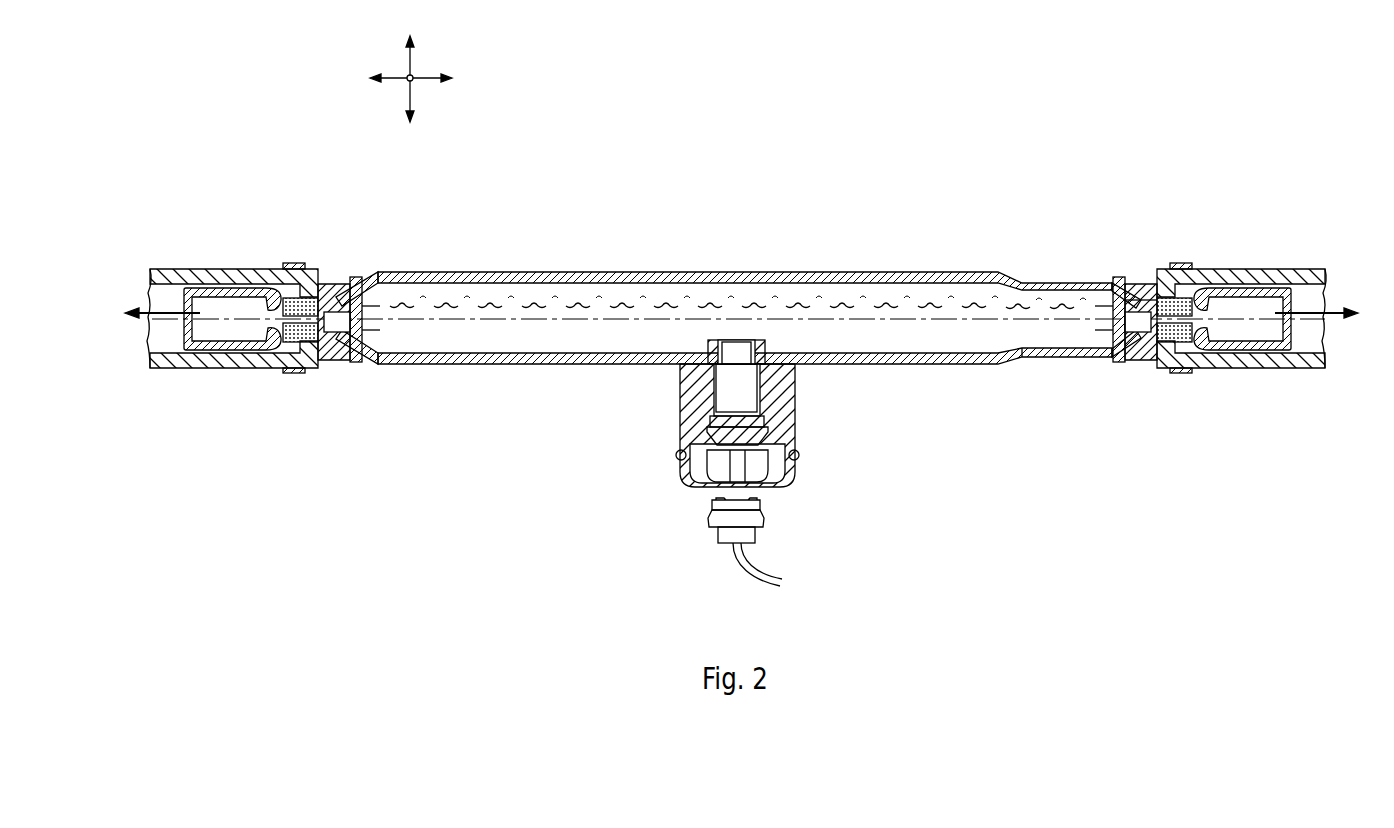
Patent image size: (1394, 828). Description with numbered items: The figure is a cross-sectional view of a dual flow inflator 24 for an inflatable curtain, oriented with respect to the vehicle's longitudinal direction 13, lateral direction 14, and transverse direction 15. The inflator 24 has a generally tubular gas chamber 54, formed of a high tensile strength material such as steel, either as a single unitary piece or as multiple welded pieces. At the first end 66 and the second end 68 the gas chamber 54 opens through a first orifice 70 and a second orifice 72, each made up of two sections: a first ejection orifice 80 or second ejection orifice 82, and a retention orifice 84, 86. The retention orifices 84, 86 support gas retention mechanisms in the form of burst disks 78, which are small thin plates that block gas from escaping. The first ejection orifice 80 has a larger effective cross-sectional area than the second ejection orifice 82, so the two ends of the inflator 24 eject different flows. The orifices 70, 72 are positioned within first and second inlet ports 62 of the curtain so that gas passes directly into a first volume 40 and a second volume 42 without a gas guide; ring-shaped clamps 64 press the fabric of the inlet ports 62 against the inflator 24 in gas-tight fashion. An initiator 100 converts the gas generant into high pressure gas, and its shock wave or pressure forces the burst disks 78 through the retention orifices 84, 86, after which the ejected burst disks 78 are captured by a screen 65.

The longitudinal direction 13 is at (431, 80).
The lateral direction 14 is at (407, 83).
The transverse direction 15 is at (412, 62).
The inflator 24 is at (812, 184).
The first volume 40 is at (1316, 240).
The second volume 42 is at (159, 240).
The gas chamber 54 is at (622, 258).
The inlet port 62 is at (272, 269).
The ring-shaped clamp 64 is at (293, 373).
The screen 65 is at (306, 269).
The first end 66 is at (1034, 360).
The second end 68 is at (381, 366).
The first orifice 70 is at (1104, 302).
The second orifice 72 is at (376, 298).
The burst disk 78 is at (366, 333).
The first ejection orifice 80 is at (1137, 286).
The second ejection orifice 82 is at (353, 277).
The retention orifice 84 is at (1134, 286).
The retention orifice 86 is at (348, 284).
The initiator 100 is at (798, 496).